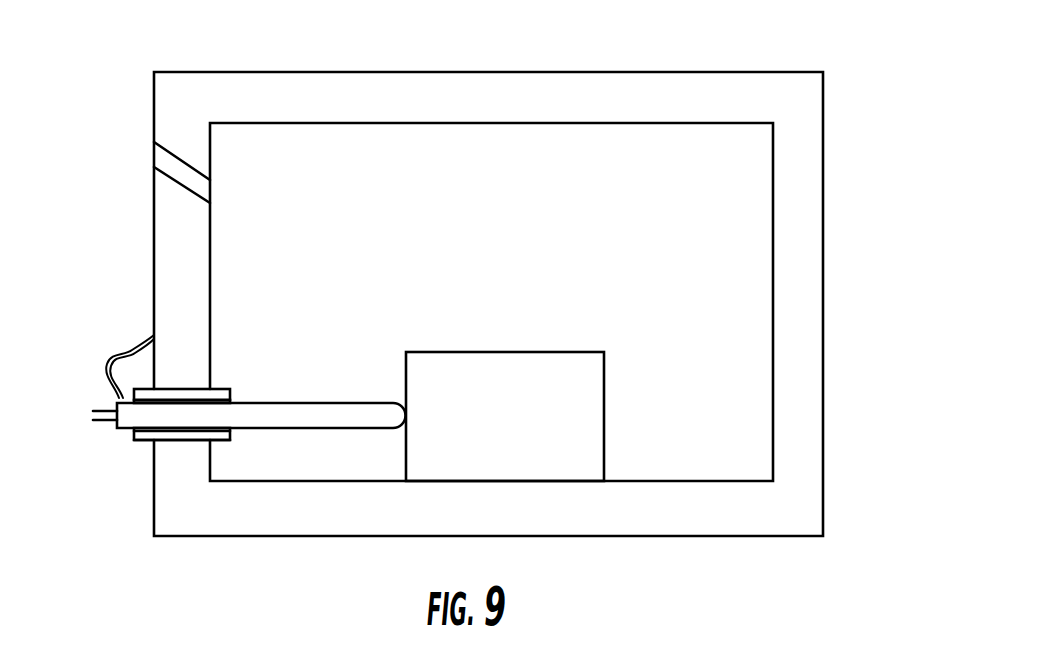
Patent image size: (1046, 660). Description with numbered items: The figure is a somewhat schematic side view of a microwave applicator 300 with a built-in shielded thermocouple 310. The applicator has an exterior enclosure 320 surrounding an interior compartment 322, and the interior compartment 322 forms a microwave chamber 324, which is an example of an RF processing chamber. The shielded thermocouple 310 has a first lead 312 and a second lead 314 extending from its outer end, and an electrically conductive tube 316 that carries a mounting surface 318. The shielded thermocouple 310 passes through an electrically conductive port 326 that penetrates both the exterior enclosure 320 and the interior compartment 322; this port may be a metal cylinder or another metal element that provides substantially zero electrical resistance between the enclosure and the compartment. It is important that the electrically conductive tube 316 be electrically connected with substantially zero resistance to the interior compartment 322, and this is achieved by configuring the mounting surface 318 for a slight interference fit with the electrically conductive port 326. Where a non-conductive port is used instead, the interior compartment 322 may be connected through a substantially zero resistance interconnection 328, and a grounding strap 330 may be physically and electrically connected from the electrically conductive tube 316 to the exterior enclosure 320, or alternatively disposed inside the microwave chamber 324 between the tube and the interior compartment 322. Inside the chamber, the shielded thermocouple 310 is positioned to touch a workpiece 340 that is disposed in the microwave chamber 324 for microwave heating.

The microwave applicator 300 is at (846, 156).
The shielded thermocouple 310 is at (354, 371).
The first lead 312 is at (113, 405).
The second lead 314 is at (103, 430).
The electrically conductive tube 316 is at (278, 403).
The mounting surface 318 is at (192, 428).
The exterior enclosure 320 is at (823, 292).
The interior compartment 322 is at (773, 232).
The microwave chamber 324 is at (705, 296).
The electrically conductive port 326 is at (143, 442).
The substantially zero resistance interconnection 328 is at (173, 150).
The grounding strap 330 is at (135, 346).
The workpiece 340 is at (466, 352).